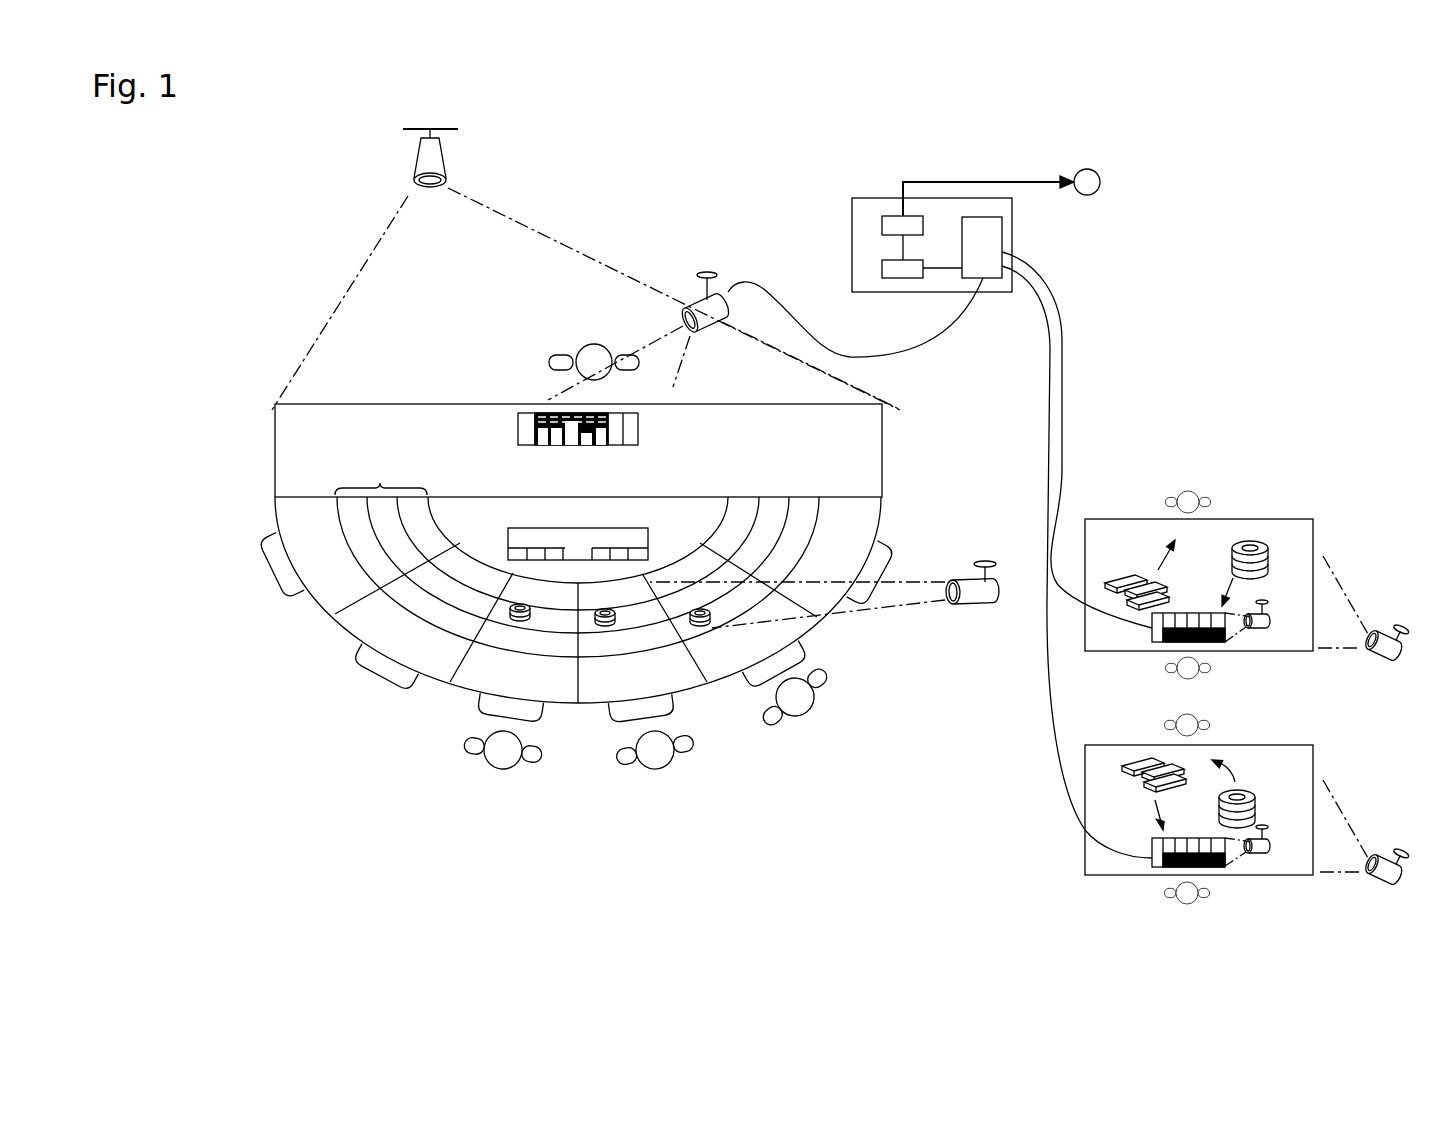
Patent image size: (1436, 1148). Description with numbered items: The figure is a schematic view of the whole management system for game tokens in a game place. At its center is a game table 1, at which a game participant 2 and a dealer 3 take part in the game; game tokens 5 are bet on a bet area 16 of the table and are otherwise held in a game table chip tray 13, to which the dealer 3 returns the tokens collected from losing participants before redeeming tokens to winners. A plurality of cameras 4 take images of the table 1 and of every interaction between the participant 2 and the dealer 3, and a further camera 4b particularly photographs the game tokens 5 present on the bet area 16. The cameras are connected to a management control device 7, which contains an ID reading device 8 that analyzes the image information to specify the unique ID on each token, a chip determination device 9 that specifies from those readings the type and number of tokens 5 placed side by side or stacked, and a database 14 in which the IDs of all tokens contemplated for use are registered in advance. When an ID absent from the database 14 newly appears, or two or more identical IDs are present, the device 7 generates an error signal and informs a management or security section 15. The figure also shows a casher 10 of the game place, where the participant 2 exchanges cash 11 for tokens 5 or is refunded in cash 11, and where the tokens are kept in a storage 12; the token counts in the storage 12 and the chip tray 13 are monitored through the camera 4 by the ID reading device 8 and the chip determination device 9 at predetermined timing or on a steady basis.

The game table 1 is at (883, 440).
The game participant 2 is at (480, 752).
The dealer 3 is at (592, 345).
The camera 4 is at (437, 155).
The camera 4b is at (963, 583).
The game token 5 is at (533, 412).
The management control device 7 is at (851, 205).
The ID reading device 8 is at (990, 228).
The chip determination device 9 is at (882, 270).
The casher 10 is at (1123, 519).
The cash 11 is at (1146, 582).
The storage 12 is at (1142, 628).
The game table chip tray 13 is at (518, 428).
The database 14 is at (882, 226).
The security section 15 is at (1100, 182).
The bet area 16 is at (381, 474).